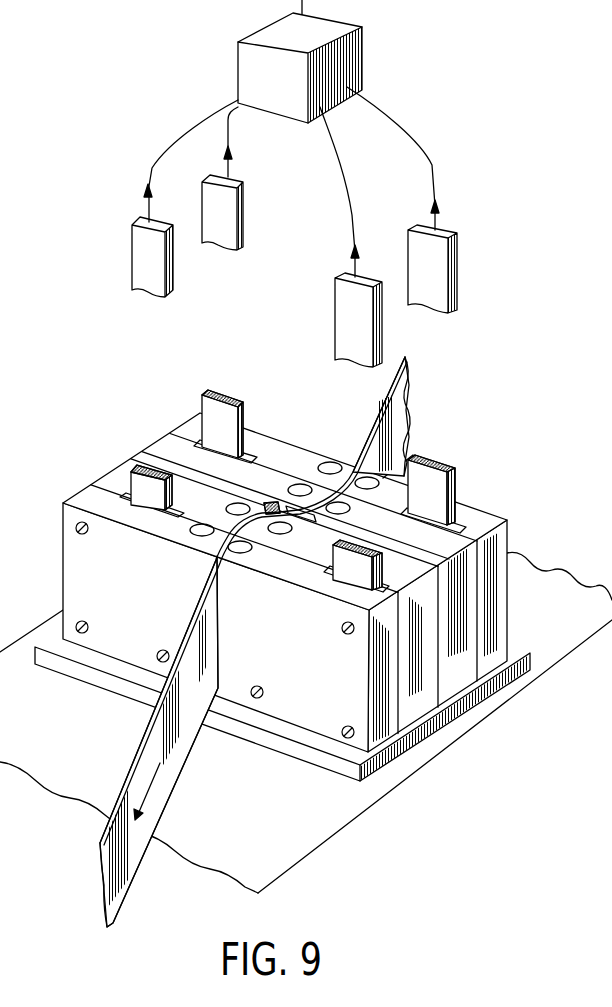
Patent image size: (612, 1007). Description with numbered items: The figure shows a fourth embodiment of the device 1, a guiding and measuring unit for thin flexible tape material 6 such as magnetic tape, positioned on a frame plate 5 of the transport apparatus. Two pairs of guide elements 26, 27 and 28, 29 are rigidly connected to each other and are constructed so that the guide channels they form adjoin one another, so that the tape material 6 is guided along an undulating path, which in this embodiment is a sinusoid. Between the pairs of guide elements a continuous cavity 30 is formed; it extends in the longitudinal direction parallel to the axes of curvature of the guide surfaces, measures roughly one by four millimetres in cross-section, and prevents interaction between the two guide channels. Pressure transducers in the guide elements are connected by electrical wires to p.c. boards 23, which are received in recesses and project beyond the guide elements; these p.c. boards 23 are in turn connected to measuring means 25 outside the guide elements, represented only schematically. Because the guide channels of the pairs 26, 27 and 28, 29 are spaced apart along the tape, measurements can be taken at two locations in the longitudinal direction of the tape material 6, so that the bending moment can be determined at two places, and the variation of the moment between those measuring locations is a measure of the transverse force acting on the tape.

The device 1 is at (275, 597).
The frame plate 5 is at (517, 683).
The tape material 6 is at (127, 872).
The p.c. board 23 is at (230, 416).
The measuring means 25 is at (353, 62).
The guide element 26 is at (397, 752).
The guide element 27 is at (111, 637).
The guide element 28 is at (524, 589).
The guide element 29 is at (280, 450).
The continuous cavity 30 is at (280, 503).